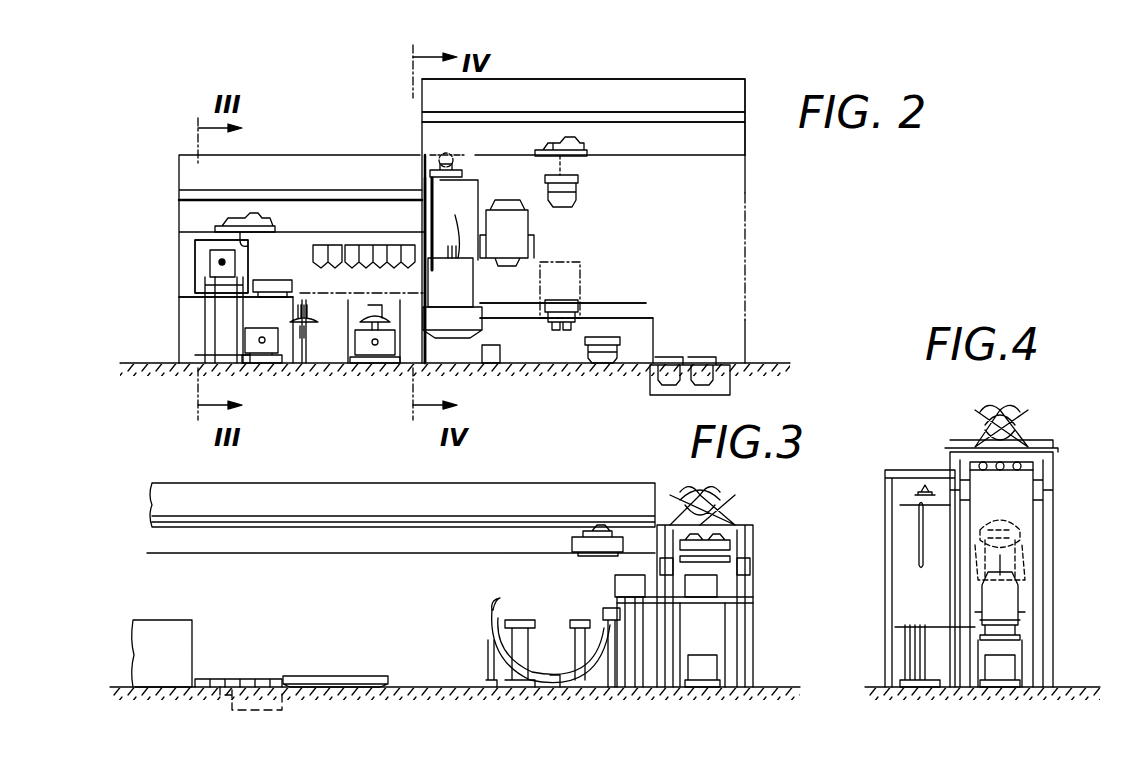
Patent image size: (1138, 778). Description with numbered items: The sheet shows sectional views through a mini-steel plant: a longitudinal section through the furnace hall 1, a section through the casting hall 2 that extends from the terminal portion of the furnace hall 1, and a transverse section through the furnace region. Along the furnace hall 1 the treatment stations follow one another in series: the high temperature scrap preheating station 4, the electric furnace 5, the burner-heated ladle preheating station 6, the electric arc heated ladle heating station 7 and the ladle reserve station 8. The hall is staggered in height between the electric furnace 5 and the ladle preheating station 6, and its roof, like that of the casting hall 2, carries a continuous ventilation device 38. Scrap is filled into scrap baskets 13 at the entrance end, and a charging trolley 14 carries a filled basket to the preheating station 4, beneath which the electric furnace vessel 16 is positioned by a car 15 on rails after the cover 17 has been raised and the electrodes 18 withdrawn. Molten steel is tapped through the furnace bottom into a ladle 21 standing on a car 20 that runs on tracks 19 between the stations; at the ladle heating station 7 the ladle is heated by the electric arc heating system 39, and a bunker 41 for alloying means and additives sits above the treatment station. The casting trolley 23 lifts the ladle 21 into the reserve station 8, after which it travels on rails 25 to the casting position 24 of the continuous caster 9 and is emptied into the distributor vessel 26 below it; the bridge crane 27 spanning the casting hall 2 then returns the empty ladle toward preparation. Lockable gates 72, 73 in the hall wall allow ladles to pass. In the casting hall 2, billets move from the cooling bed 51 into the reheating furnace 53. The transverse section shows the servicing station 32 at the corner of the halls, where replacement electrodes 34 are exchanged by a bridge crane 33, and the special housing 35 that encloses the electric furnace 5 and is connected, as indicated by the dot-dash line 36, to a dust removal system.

In FIG. 2, the furnace hall 1 is at (825, 231).
In FIG. 3, the casting hall 2 is at (88, 601).
In FIG. 2, the high temperature scrap preheating station 4 is at (520, 240).
In FIG. 4, the high temperature scrap preheating station 4 is at (1010, 560).
In FIG. 2, the electric furnace 5 is at (458, 343).
In FIG. 2, the burner-heated ladle preheating station 6 is at (378, 368).
In FIG. 2, the electric arc heated ladle heating station 7 is at (295, 392).
In FIG. 2, the ladle reserve station 8 is at (205, 298).
In FIG. 3, the ladle reserve station 8 is at (725, 597).
In FIG. 3, the continuous caster 9 is at (590, 675).
In FIG. 2, the scrap baskets 13 is at (580, 195).
In FIG. 2, the charging trolley 14 is at (556, 143).
In FIG. 4, the charging trolley 14 is at (1030, 466).
In FIG. 2, the car 15 is at (485, 318).
In FIG. 2, the electric furnace vessel 16 is at (455, 280).
In FIG. 4, the electric furnace vessel 16 is at (1010, 595).
In FIG. 2, the cover 17 is at (455, 224).
In FIG. 2, the electrodes 18 is at (432, 258).
In FIG. 2, the tracks 19 is at (332, 300).
In FIG. 2, the car 20 is at (270, 280).
In FIG. 2, the ladle 21 is at (208, 258).
In FIG. 3, the ladle 21 is at (705, 583).
In FIG. 4, the ladle 21 is at (1005, 663).
In FIG. 2, the casting trolley 23 is at (254, 223).
In FIG. 3, the casting trolley 23 is at (730, 545).
In FIG. 3, the casting position 24 is at (615, 596).
In FIG. 3, the rails 25 is at (702, 645).
In FIG. 3, the distributor vessel 26 is at (603, 605).
In FIG. 3, the bridge crane 27 is at (603, 531).
In FIG. 4, the servicing station 32 is at (890, 530).
In FIG. 2, the bridge crane 33 is at (470, 174).
In FIG. 4, the bridge crane 33 is at (925, 488).
In FIG. 2, the replacement electrodes 34 is at (425, 183).
In FIG. 4, the replacement electrodes 34 is at (905, 655).
In FIG. 4, the special housing 35 is at (1040, 520).
In FIG. 2, the dot-dash line 36 is at (452, 150).
In FIG. 2, the continuous ventilation device 38 is at (680, 93).
In FIG. 3, the continuous ventilation device 38 is at (575, 495).
In FIG. 4, the continuous ventilation device 38 is at (1010, 415).
In FIG. 2, the electric arc heating system 39 is at (330, 290).
In FIG. 2, the bunker 41 is at (378, 245).
In FIG. 3, the cooling bed 51 is at (335, 676).
In FIG. 3, the reheating furnace 53 is at (178, 625).
In FIG. 2, the lockable gate 72 is at (365, 310).
In FIG. 2, the lockable gate 73 is at (195, 276).